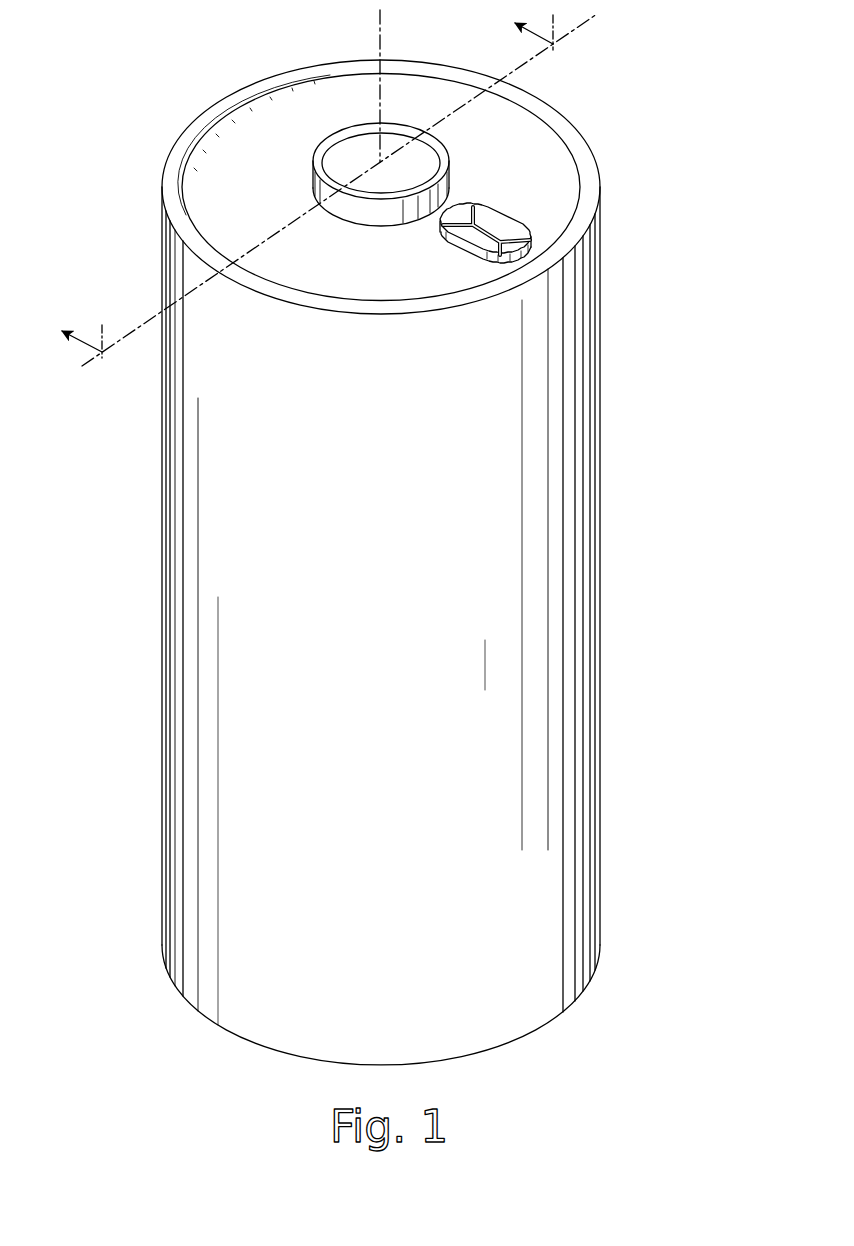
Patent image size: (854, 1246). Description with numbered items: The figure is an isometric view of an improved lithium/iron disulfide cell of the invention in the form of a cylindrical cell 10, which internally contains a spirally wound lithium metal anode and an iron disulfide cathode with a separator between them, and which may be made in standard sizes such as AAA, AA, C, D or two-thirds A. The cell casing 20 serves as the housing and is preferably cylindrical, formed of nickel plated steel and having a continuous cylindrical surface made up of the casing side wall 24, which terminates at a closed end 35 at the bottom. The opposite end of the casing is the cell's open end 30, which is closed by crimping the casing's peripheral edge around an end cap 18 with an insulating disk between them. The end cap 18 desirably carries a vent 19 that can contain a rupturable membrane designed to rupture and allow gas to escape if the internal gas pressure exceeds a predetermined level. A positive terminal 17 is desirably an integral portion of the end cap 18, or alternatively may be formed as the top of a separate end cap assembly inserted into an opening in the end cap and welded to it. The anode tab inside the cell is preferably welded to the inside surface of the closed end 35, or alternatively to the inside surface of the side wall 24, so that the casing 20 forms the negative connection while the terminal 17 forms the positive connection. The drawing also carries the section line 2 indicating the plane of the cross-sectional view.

The cylindrical cell 10 is at (375, 556).
The positive terminal 17 is at (335, 137).
The end cap 18 is at (408, 187).
The vent 19 is at (470, 240).
The cell casing 20 is at (433, 645).
The casing side wall 24 is at (598, 375).
The open end 30 is at (543, 152).
The closed end 35 is at (228, 1028).
The section line 2- 2 is at (329, 193).